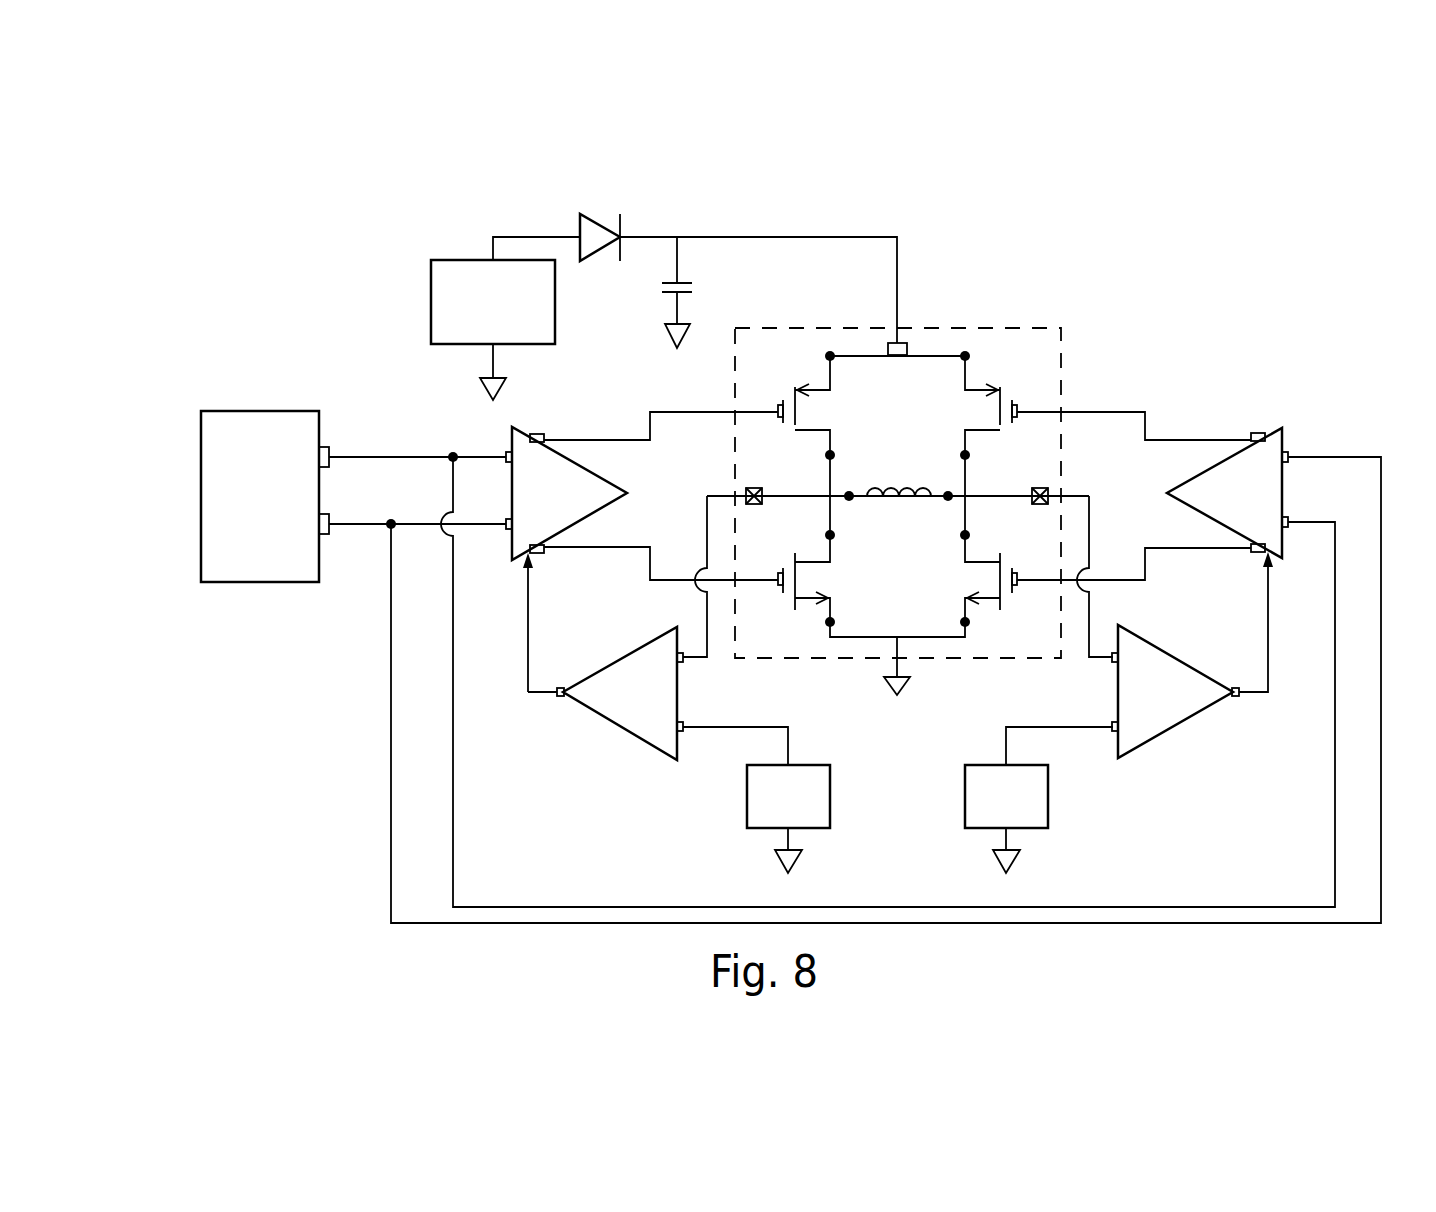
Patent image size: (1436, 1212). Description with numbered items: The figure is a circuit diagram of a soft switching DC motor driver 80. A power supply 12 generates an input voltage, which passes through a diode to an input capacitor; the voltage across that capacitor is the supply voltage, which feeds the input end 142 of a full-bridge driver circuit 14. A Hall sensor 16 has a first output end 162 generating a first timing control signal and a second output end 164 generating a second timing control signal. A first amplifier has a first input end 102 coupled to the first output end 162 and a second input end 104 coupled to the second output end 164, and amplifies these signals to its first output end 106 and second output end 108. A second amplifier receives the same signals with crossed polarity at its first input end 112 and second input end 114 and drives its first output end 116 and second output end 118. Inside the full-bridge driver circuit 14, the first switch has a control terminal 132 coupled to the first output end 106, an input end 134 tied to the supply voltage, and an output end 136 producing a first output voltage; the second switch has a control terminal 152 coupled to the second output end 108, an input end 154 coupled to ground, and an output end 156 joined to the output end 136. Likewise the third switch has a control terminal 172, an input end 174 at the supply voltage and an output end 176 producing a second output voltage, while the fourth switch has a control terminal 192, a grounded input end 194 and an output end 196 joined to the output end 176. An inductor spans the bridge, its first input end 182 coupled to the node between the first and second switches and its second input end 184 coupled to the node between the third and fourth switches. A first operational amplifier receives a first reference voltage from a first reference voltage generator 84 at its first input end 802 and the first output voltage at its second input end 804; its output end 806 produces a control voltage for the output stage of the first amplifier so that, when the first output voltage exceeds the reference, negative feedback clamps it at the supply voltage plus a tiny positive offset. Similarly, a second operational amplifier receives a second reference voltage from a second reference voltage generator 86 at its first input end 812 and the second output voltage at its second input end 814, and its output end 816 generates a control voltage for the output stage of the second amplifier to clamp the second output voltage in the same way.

The soft switching DC motor driver 80 is at (1216, 222).
The power supply 12 is at (431, 301).
The full-bridge driver circuit 14 is at (1017, 328).
The Hall sensor 16 is at (255, 411).
The first output end 162 is at (329, 455).
The second output end 164 is at (329, 536).
The first input end 102 is at (506, 452).
The second input end 104 is at (506, 531).
The first output end 106 is at (537, 434).
The second output end 108 is at (537, 553).
The first input end 112 is at (1288, 457).
The second input end 114 is at (1288, 527).
The first output end 116 is at (1258, 433).
The second output end 118 is at (1258, 552).
The control terminal 132 is at (778, 405).
The input end 134 is at (829, 355).
The output end 136 is at (830, 455).
The input end 142 is at (900, 343).
The control terminal 152 is at (780, 587).
The input end 154 is at (830, 622).
The output end 156 is at (830, 535).
The control terminal 172 is at (1017, 405).
The input end 174 is at (965, 355).
The output end 176 is at (965, 455).
The first input end 182 is at (849, 500).
The second input end 184 is at (948, 500).
The control terminal 192 is at (1015, 587).
The input end 194 is at (965, 622).
The output end 196 is at (965, 535).
The first input end 802 is at (683, 730).
The second input end 804 is at (683, 660).
The output end 806 is at (560, 695).
The first input end 812 is at (1113, 730).
The second input end 814 is at (1113, 660).
The output end 816 is at (1236, 695).
The first reference voltage generator 84 is at (830, 790).
The second reference voltage generator 86 is at (965, 790).